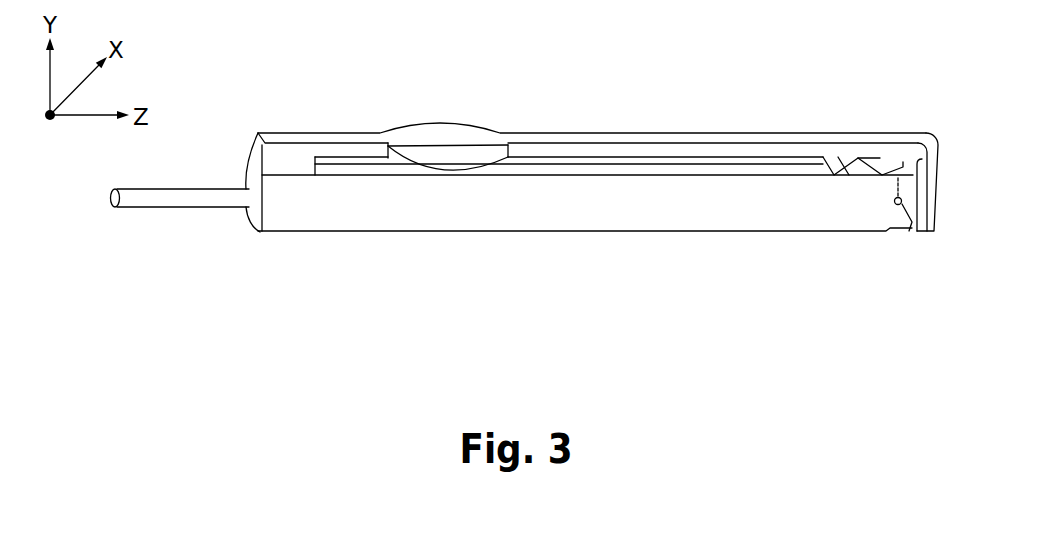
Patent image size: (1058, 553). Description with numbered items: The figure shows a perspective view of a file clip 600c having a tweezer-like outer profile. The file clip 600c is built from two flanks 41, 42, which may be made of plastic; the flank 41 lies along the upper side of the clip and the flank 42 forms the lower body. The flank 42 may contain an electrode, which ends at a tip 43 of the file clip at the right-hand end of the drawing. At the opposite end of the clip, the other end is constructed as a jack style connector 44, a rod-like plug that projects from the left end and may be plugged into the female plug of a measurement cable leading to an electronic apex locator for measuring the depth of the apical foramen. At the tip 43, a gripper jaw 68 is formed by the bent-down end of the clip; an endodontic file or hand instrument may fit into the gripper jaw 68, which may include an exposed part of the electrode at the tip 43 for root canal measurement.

The flank 41 is at (608, 152).
The flank 42 is at (743, 218).
The tip 43 is at (897, 205).
The jack style connector 44 is at (167, 198).
The gripper jaw 68 is at (930, 215).
The file clip 600c is at (531, 247).